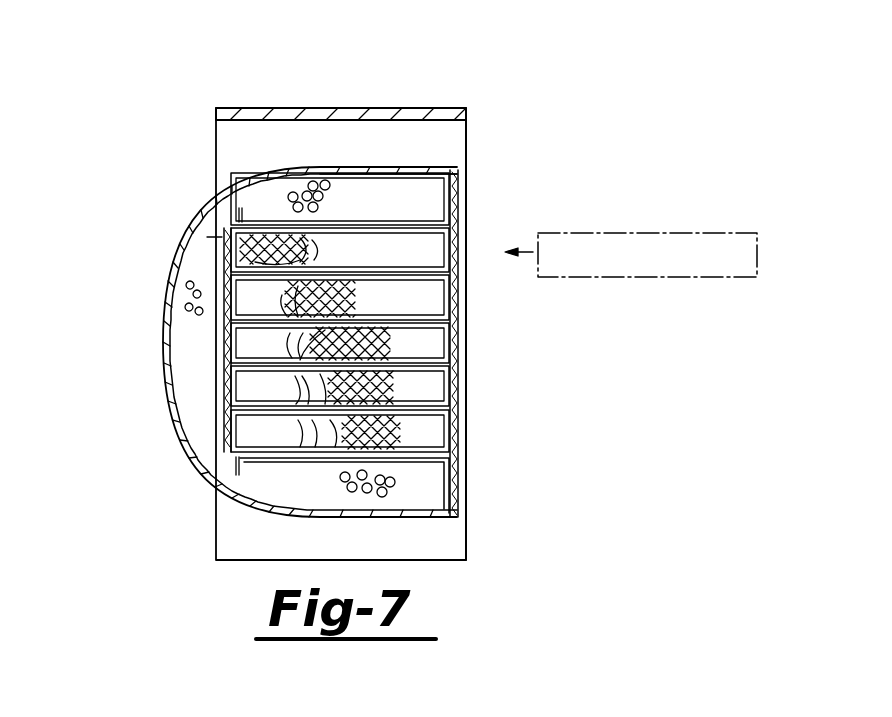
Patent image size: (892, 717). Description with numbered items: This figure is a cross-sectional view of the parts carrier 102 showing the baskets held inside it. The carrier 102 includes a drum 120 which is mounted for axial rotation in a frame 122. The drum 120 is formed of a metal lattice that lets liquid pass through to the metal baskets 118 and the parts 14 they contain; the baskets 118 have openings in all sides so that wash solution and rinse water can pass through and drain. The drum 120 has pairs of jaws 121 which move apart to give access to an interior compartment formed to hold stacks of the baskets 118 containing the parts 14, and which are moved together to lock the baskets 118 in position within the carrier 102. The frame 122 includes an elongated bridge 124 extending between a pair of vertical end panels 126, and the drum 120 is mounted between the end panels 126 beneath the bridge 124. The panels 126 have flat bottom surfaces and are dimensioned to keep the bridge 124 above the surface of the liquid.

The parts carrier 102 is at (447, 99).
The elongated bridge 124 is at (295, 108).
The frame 122 is at (506, 141).
The drum 120 is at (168, 287).
The vertical end panels 126 is at (280, 157).
The jaws 121 is at (458, 388).
The parts 14 is at (345, 302).
The metal baskets 118 is at (690, 232).